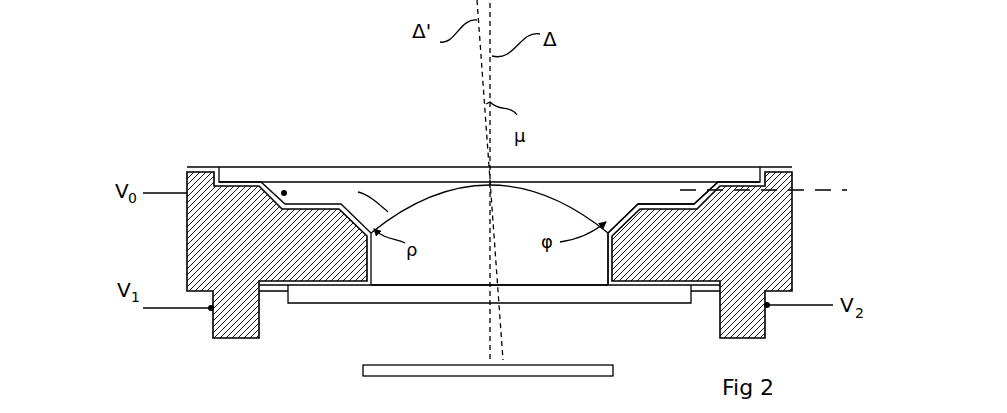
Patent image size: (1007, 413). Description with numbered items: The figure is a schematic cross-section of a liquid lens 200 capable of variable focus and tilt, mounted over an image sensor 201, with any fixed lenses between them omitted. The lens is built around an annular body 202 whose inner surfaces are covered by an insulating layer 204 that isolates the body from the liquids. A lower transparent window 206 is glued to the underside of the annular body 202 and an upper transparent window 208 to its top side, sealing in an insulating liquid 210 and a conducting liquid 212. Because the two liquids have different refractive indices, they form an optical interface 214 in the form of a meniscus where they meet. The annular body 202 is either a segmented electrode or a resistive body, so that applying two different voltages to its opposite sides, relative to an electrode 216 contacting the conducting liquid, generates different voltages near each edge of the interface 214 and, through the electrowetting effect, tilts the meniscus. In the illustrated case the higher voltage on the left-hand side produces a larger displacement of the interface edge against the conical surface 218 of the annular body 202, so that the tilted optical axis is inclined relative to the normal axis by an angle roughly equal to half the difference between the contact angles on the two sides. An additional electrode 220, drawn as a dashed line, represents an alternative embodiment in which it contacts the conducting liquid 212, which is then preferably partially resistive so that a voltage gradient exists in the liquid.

The liquid lens 200 is at (724, 112).
The image sensor 201 is at (567, 371).
The annular body 202 is at (648, 273).
The insulating layer 204 is at (612, 260).
The transparent window 206 is at (405, 293).
The transparent window 208 is at (597, 173).
The insulating liquid 210 is at (523, 270).
The conducting liquid 212 is at (662, 197).
The optical interface 214 is at (433, 196).
The electrode 216 is at (284, 190).
The conical surface 218 is at (388, 212).
The electrode 220 is at (828, 188).